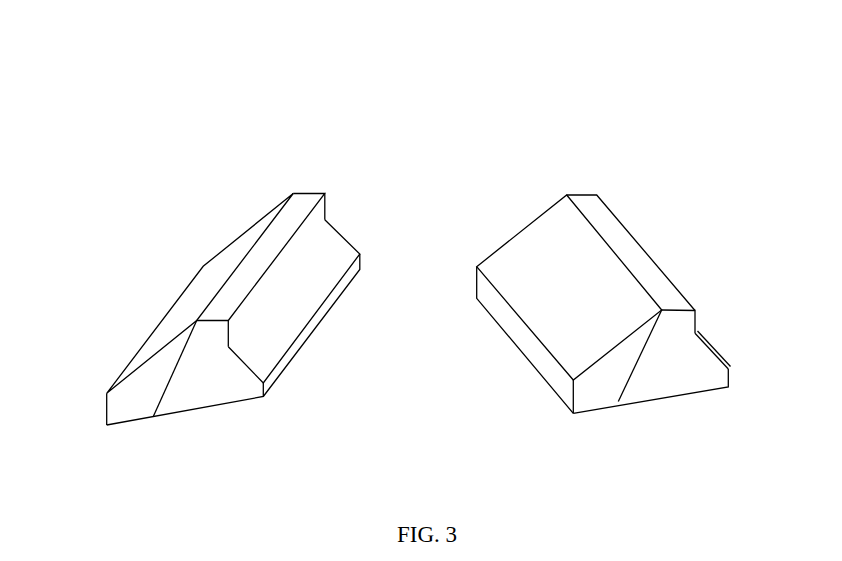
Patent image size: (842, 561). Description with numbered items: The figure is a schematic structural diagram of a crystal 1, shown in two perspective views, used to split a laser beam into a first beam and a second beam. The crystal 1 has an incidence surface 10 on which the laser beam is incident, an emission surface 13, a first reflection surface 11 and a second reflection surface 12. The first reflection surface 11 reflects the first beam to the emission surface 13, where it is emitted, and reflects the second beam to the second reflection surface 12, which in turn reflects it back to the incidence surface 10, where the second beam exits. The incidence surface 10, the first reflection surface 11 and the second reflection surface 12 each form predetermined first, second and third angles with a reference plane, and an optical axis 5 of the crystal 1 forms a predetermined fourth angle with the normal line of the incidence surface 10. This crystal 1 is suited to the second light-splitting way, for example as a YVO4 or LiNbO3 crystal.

The crystal 1 is at (490, 109).
The optical axis 5 is at (163, 396).
The incidence surface 10 is at (180, 414).
The first reflection surface 11 is at (187, 295).
The second reflection surface 12 is at (267, 338).
The emission surface 13 is at (308, 223).